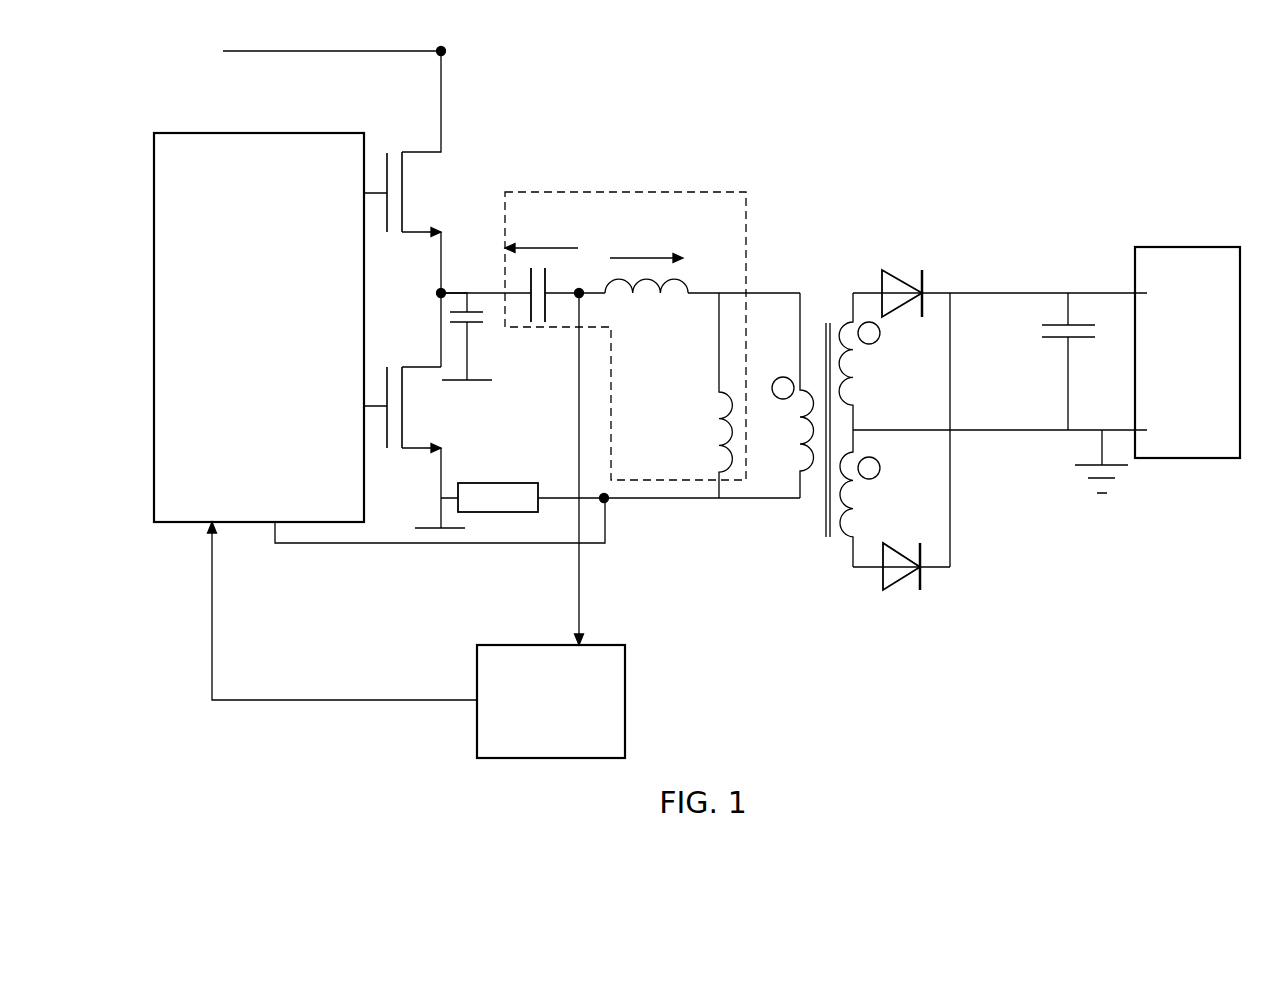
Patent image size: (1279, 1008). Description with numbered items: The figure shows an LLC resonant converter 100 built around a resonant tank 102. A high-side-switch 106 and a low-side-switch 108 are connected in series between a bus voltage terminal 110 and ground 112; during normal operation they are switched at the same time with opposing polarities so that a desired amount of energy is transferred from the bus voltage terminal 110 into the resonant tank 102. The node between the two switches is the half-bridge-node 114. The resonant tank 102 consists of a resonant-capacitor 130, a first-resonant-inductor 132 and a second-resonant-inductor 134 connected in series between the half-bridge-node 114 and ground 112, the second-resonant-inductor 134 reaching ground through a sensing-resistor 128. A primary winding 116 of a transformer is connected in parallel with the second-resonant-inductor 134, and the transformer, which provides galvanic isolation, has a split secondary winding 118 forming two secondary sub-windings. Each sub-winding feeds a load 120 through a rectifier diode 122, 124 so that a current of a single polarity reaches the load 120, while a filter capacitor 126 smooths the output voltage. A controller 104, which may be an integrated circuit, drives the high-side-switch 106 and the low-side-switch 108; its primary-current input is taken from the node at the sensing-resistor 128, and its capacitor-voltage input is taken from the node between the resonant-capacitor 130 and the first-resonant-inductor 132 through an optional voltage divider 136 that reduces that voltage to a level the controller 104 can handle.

The LLC resonant converter 100 is at (749, 83).
The resonant tank 102 is at (625, 191).
The controller 104 is at (258, 133).
The high-side-switch 106 is at (420, 152).
The low-side-switch 108 is at (420, 367).
The bus voltage terminal 110 is at (446, 50).
The ground 112 is at (430, 530).
The half-bridge-node 114 is at (430, 292).
The primary winding 116 is at (808, 475).
The split secondary winding 118 is at (848, 540).
The load 120 is at (1180, 458).
The rectifier diode 122 is at (905, 270).
The rectifier diode 124 is at (897, 592).
The filter capacitor 126 is at (1078, 322).
The sensing-resistor Rsense 128 is at (497, 512).
The resonant-capacitor cr 130 is at (546, 324).
The first-resonant-inductor Ir 132 is at (688, 297).
The second-resonant-inductor Im 134 is at (715, 418).
The voltage divider 136 is at (625, 702).